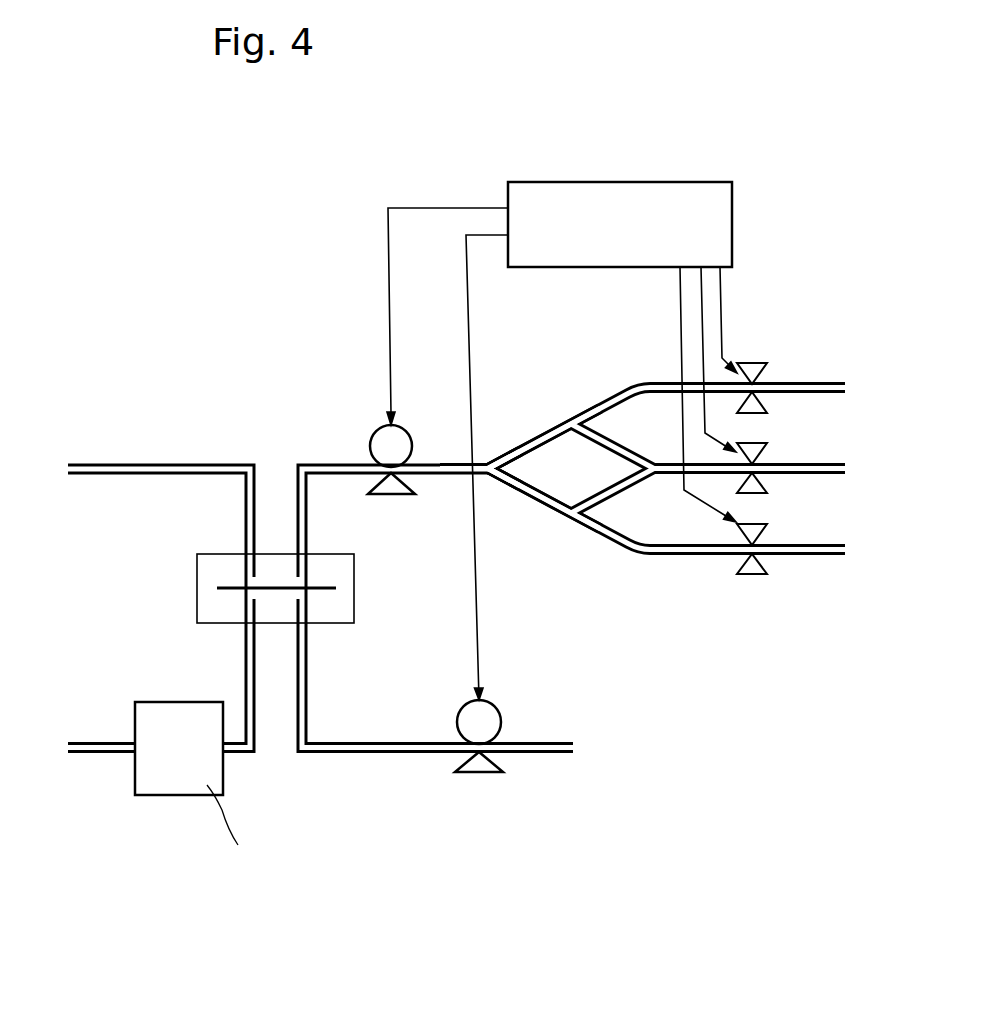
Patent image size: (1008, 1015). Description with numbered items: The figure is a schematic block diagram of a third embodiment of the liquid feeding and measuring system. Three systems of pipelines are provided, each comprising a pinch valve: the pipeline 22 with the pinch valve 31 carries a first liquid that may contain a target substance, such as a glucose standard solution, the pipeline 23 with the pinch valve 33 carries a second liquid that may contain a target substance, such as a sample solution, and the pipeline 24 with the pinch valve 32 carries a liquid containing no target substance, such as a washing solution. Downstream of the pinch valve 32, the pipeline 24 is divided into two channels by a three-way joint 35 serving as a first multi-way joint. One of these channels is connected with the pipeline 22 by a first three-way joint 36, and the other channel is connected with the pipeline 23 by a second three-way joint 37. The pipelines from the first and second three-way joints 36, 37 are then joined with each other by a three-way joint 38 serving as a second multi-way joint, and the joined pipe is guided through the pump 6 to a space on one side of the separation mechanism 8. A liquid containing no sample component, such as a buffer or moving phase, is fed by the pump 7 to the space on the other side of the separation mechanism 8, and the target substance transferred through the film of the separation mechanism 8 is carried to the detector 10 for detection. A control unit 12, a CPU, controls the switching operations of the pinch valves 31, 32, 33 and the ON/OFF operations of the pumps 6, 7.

The control unit 12 is at (660, 181).
The pump 6 is at (370, 433).
The pump 7 is at (480, 775).
The separation mechanism 8 is at (354, 598).
The detector 10 is at (180, 797).
The pipeline 22 is at (830, 383).
The pipeline 23 is at (830, 545).
The pipeline 24 is at (830, 464).
The pinch valve 31 is at (750, 362).
The pinch valve 32 is at (765, 443).
The pinch valve 33 is at (765, 524).
The three-way joint 35 is at (657, 463).
The first three-way joint 36 is at (570, 418).
The second three-way joint 37 is at (571, 522).
The three-way joint 38 is at (489, 474).